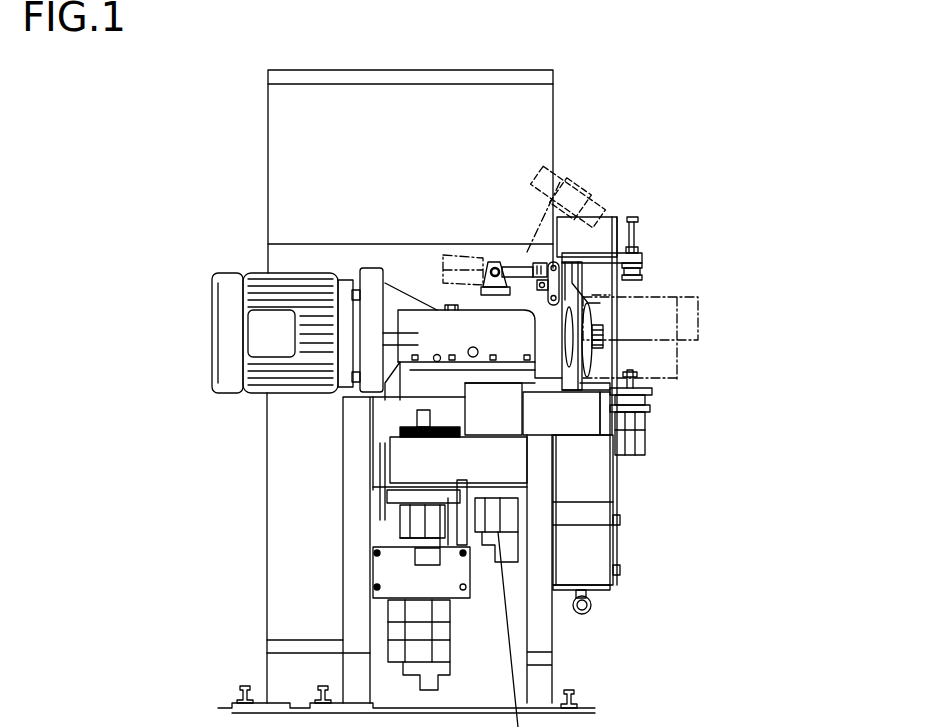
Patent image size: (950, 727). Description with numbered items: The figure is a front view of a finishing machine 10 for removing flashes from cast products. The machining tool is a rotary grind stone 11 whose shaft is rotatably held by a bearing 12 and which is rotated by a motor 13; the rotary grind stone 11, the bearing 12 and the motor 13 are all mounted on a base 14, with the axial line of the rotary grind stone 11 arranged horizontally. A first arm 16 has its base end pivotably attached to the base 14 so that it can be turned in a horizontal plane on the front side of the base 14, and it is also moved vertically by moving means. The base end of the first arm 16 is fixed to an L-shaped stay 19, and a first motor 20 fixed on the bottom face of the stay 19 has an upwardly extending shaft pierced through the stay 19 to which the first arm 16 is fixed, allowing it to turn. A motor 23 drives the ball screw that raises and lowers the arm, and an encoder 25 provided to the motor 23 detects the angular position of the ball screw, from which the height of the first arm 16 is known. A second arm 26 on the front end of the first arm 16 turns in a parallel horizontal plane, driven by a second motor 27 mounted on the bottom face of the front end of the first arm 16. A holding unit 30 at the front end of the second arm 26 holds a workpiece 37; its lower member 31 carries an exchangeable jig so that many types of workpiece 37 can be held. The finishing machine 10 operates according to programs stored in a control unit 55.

The finishing machine 10 is at (775, 64).
The rotary grind stone 11 is at (668, 317).
The bearing 12 is at (445, 217).
The motor 13 is at (264, 330).
The base 14 is at (390, 436).
The first arm 16 is at (348, 466).
The stay 19 is at (326, 525).
The first motor 20 is at (327, 552).
The motor 23 is at (317, 631).
The encoder (fourth position sensor) 25 is at (317, 664).
The second arm 26 is at (637, 415).
The second motor 27 is at (579, 612).
The holding unit 30 is at (652, 228).
The lower member 31 is at (660, 397).
The workpiece 37 is at (698, 320).
The control unit 55 is at (349, 171).